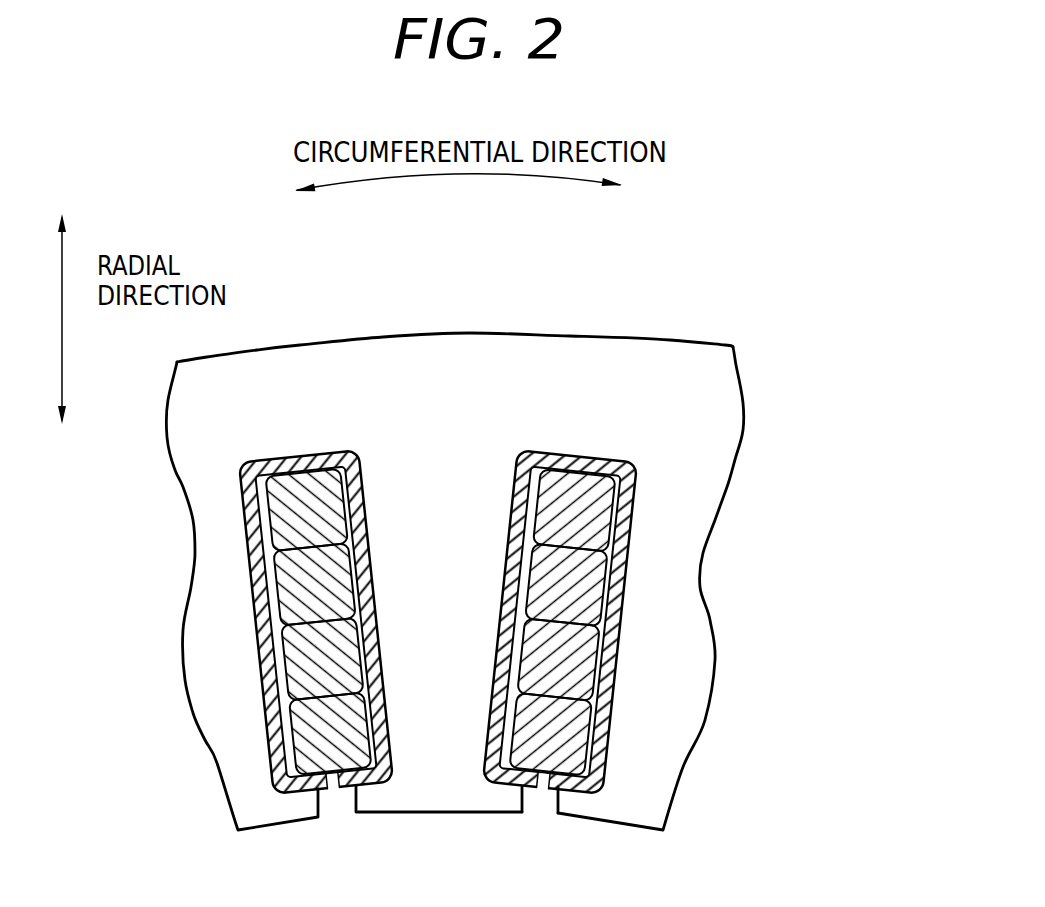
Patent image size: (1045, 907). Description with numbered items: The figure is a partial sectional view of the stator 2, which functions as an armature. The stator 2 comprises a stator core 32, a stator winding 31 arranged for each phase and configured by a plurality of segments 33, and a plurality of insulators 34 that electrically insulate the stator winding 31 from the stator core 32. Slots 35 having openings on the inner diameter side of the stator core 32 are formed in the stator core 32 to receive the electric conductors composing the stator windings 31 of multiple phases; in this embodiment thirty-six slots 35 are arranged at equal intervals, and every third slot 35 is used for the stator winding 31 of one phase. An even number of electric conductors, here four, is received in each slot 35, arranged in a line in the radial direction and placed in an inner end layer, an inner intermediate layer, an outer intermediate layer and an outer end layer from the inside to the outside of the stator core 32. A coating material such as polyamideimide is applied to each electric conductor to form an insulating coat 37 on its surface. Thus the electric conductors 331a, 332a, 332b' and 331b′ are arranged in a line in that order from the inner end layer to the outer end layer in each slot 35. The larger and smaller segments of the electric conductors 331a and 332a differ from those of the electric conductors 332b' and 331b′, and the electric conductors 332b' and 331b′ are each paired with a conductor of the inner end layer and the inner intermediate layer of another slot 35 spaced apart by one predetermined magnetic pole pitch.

The stator 2 is at (675, 304).
The stator winding 31 is at (833, 490).
The stator core 32 is at (487, 355).
The segment 33 is at (454, 588).
The insulator 34 is at (623, 457).
The slot 35 is at (541, 790).
The insulating coat 37 is at (250, 499).
The electric conductor 331a is at (570, 763).
The electric conductor 331b′ is at (590, 512).
The electric conductor 332a is at (580, 665).
The electric conductor 332b' is at (680, 585).